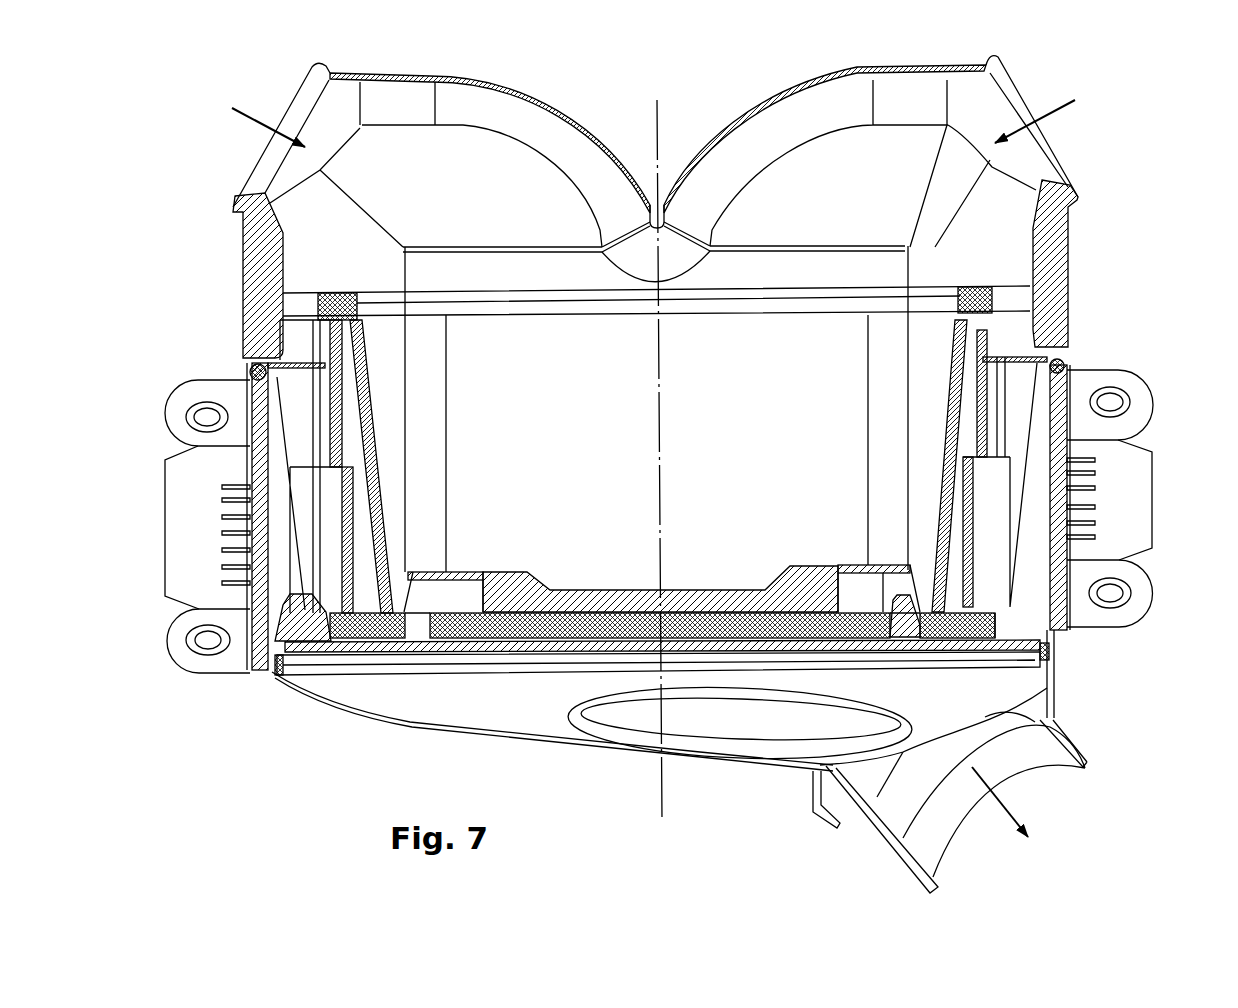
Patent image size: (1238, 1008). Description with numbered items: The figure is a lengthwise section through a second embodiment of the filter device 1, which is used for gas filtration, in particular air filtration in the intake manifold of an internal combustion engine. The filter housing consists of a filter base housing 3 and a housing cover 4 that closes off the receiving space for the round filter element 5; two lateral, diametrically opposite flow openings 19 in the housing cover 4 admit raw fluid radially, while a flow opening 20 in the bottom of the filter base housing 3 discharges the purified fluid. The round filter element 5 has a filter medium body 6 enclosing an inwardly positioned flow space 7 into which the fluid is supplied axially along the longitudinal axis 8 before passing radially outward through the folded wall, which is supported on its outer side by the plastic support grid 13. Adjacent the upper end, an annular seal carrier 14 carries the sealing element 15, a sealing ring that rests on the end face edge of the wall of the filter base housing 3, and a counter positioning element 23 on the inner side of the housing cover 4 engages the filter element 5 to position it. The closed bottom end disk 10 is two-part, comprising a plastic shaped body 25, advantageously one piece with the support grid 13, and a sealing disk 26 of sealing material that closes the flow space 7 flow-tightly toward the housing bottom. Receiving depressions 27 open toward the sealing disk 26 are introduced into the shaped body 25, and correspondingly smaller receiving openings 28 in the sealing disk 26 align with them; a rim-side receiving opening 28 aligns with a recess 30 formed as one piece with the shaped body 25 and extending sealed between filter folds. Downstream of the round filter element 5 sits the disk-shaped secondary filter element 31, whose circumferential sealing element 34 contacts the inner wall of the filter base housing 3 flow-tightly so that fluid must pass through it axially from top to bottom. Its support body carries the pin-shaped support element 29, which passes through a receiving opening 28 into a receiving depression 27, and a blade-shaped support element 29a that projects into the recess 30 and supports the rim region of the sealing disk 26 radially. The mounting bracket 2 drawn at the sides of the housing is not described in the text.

The filter device 1 is at (1028, 68).
The mounting bracket 2 is at (188, 378).
The filter base housing 3 is at (266, 672).
The housing cover 4 is at (502, 85).
The round filter element 5 is at (479, 288).
The filter medium body 6 is at (1015, 408).
The flow space 7 is at (541, 438).
The longitudinal axis 8 is at (658, 127).
The end disk 10 is at (488, 640).
The support grid 13 is at (1037, 433).
The seal carrier 14 is at (1020, 343).
The sealing element 15 is at (1062, 364).
The flow openings 19 is at (296, 104).
The flow opening 20 is at (1022, 780).
The counter positioning element 23 is at (1036, 261).
The shaped body 25 is at (527, 583).
The sealing disk 26 is at (535, 634).
The receiving depressions 27 is at (430, 585).
The receiving openings 28 is at (425, 628).
The support element 29 is at (903, 626).
The support element 29a is at (305, 611).
The recess 30 is at (308, 547).
The secondary filter element 31 is at (325, 678).
The sealing element 34 is at (1051, 657).